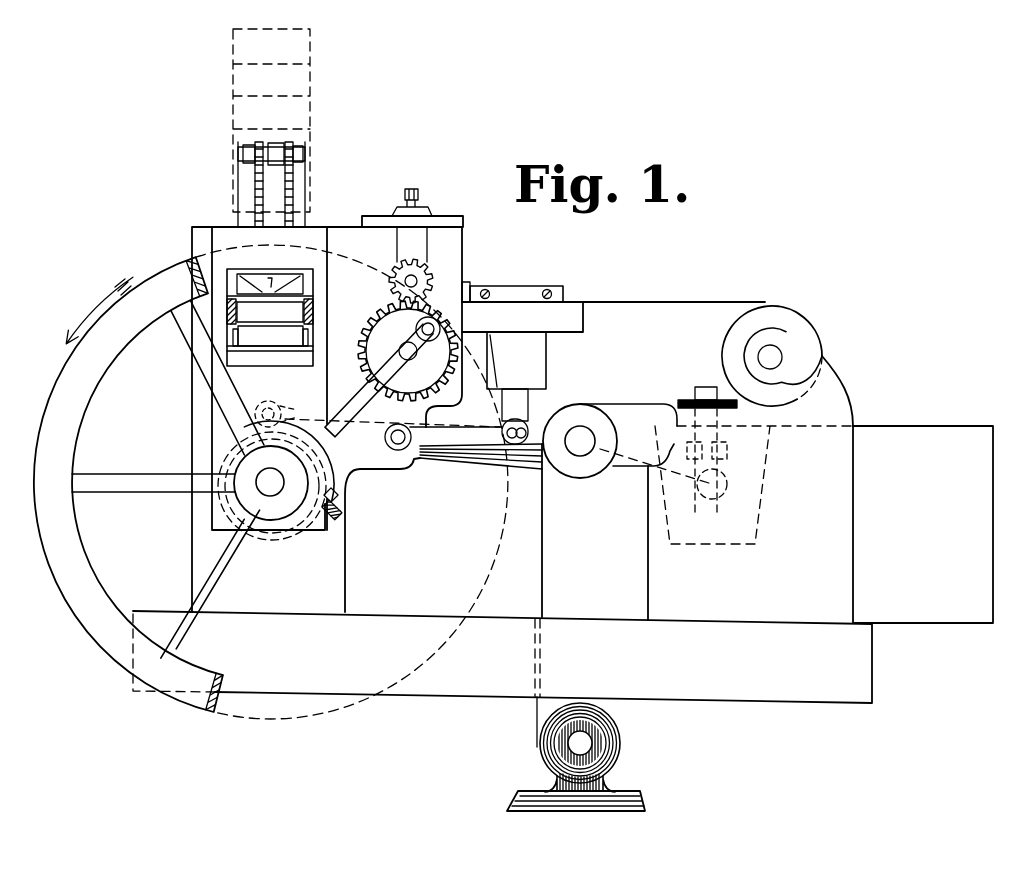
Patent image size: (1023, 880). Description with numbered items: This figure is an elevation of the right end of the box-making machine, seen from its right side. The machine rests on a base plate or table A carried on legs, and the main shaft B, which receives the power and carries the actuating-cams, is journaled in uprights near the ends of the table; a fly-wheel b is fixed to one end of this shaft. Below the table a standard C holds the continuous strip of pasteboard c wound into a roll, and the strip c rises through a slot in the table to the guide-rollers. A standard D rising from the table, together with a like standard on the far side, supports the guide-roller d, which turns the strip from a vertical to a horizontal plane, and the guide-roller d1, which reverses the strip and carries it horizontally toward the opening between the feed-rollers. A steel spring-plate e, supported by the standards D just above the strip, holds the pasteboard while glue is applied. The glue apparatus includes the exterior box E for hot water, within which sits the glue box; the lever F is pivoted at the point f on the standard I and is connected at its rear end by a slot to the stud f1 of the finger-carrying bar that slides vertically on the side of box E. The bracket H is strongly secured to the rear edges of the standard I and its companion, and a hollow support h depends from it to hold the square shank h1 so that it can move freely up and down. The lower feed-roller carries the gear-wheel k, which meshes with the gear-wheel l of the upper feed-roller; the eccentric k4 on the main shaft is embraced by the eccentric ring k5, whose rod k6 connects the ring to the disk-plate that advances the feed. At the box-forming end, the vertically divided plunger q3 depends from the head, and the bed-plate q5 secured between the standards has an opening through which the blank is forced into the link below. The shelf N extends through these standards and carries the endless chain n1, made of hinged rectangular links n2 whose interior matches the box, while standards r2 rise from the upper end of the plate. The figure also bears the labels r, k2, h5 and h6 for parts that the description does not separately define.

The fly-wheel b is at (123, 348).
The main shaft B is at (275, 487).
The pivot point f is at (333, 490).
The eccentric k4 is at (340, 492).
The eccentric ring k5 is at (338, 515).
The continuous strip of pasteboard c is at (622, 305).
The bar or shelf N is at (228, 309).
The feed box top part r is at (270, 291).
The plunger q3 is at (240, 285).
The bed-plate q5 is at (233, 318).
The rectangular links n2 is at (265, 363).
The endless chain n1 is at (303, 108).
The standards r2 is at (263, 180).
The gear-wheel k is at (397, 336).
The crank disc k2 is at (383, 352).
The rod k6 is at (378, 408).
The gear-wheel l is at (396, 271).
The clamp bar h5 is at (563, 300).
The bracket H is at (582, 333).
The hollow support h is at (537, 367).
The square shank h1 is at (508, 396).
The lever arm h6 is at (487, 425).
The lever F is at (437, 457).
The standard I is at (347, 550).
The guide-roller d is at (570, 480).
The exterior box E is at (647, 570).
The spring-plate e is at (678, 403).
The stud f1 is at (734, 485).
The guide-roller d1 is at (722, 362).
The standard D is at (855, 550).
The base plate or table A is at (750, 707).
The standard C is at (612, 790).